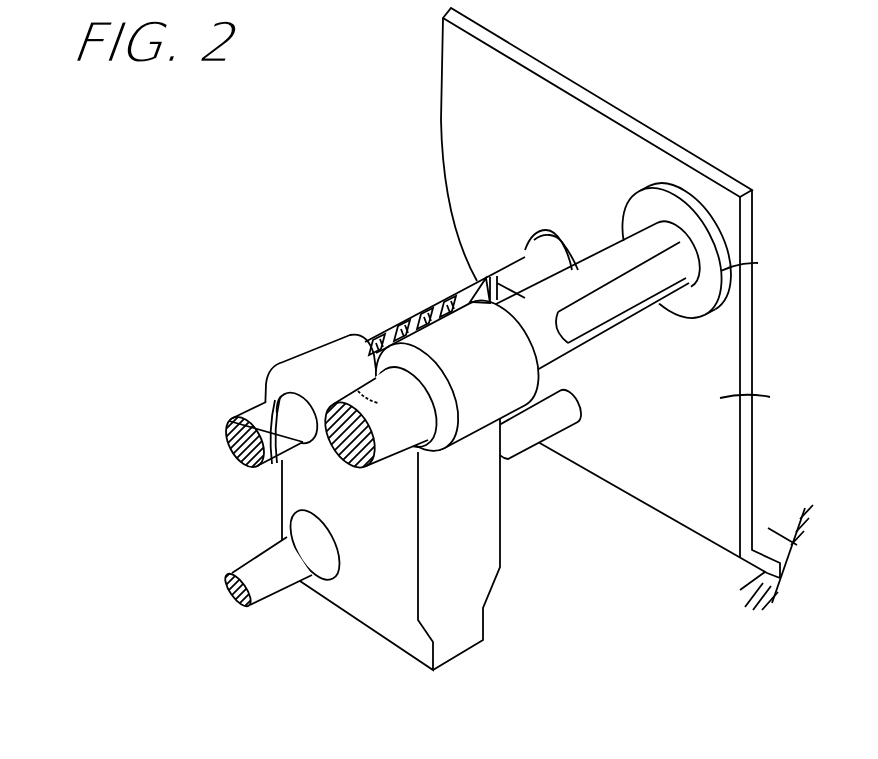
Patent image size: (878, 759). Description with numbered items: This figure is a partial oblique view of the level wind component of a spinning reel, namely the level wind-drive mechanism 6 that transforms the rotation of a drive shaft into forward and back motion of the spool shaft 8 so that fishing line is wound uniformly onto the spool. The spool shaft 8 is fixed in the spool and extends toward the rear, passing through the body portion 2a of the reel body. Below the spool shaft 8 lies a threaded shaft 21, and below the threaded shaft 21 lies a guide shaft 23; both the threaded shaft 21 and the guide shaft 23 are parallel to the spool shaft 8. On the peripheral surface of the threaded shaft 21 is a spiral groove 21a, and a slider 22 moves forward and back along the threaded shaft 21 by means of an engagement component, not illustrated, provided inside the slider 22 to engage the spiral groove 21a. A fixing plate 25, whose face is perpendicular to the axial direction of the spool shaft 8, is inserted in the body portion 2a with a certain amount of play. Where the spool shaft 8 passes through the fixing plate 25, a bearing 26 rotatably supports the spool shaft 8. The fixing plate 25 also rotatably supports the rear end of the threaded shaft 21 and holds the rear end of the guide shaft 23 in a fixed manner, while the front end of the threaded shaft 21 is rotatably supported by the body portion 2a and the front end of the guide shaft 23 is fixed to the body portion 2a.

The body portion 2a is at (790, 555).
The level wind-drive mechanism 6 is at (535, 600).
The spool shaft 8 is at (530, 317).
The threaded shaft 21 is at (254, 407).
The spiral groove 21a is at (403, 327).
The slider 22 is at (452, 635).
The guide shaft 23 is at (275, 572).
The fixing plate 25 is at (720, 398).
The bearing 26 is at (707, 272).